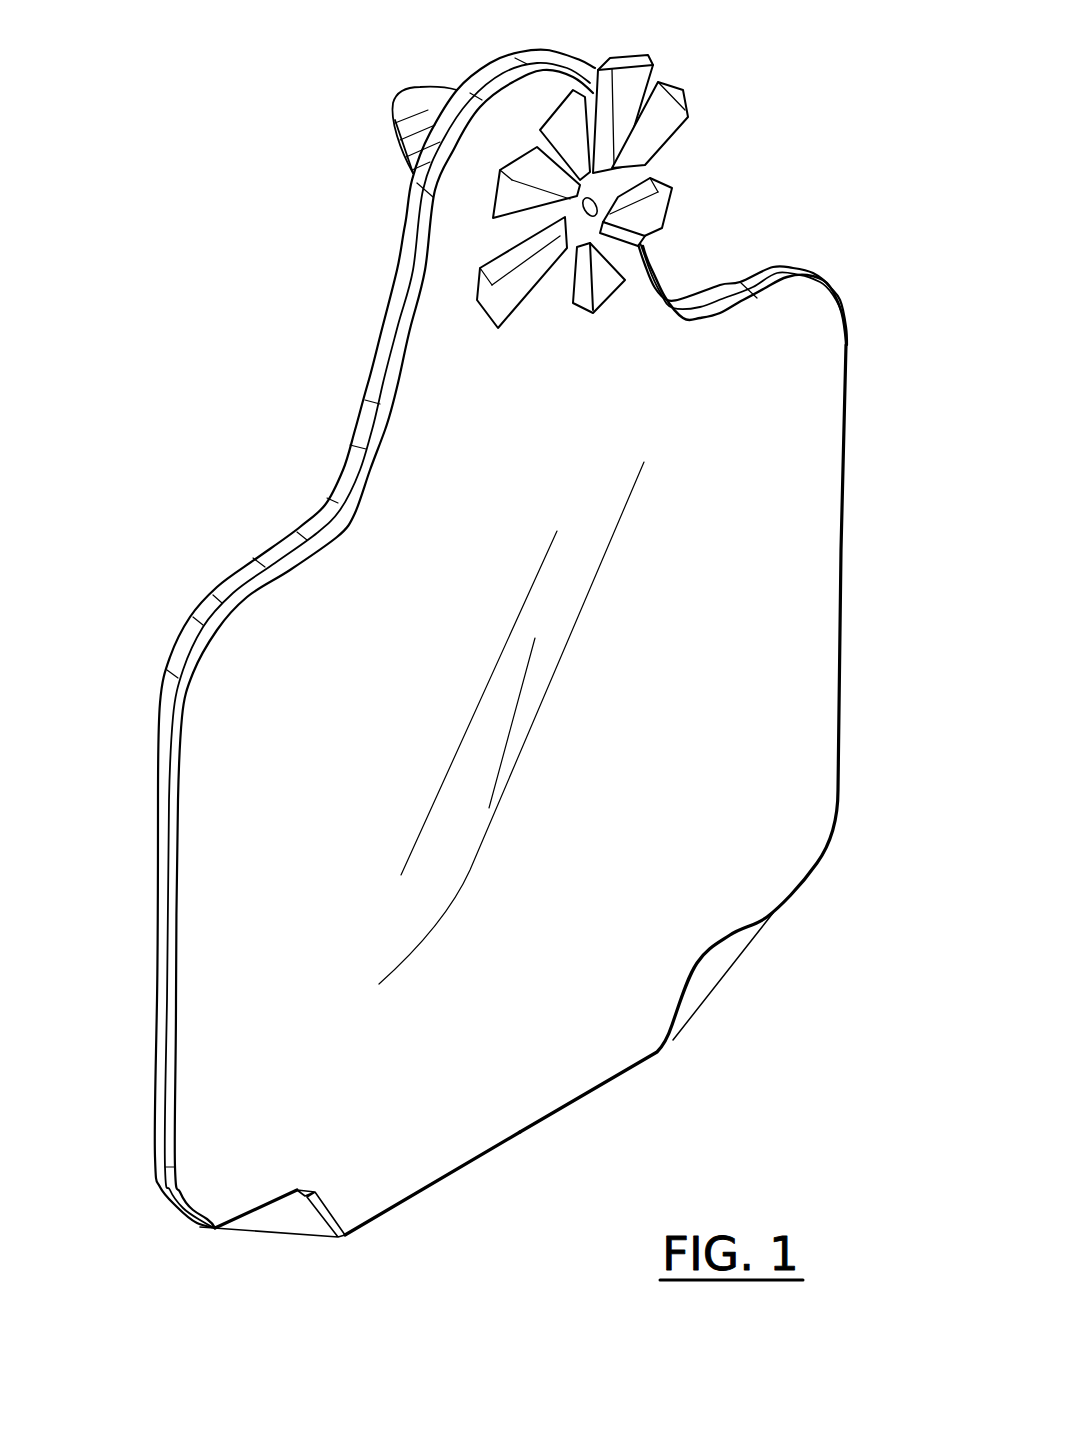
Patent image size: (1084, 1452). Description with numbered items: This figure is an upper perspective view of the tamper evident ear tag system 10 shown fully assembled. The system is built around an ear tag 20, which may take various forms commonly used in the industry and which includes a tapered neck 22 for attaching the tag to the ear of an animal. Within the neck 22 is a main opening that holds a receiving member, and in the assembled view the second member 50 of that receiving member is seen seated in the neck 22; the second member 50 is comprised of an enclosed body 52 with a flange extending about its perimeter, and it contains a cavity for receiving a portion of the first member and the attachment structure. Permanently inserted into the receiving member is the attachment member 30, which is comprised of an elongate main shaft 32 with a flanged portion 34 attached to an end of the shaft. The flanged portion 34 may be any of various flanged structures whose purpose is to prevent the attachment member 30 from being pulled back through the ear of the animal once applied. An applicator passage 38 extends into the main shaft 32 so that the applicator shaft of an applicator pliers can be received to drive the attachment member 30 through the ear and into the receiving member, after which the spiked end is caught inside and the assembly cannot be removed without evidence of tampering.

The tamper evident ear tag system 10 is at (195, 172).
The ear tag 20 is at (632, 950).
The tapered neck 22 is at (488, 393).
The attachment member 30 is at (662, 72).
The main shaft 32 is at (534, 153).
The flanged portion 34 is at (678, 117).
The applicator passage 38 is at (655, 233).
The second member 50 is at (412, 97).
The enclosed body 52 is at (395, 137).